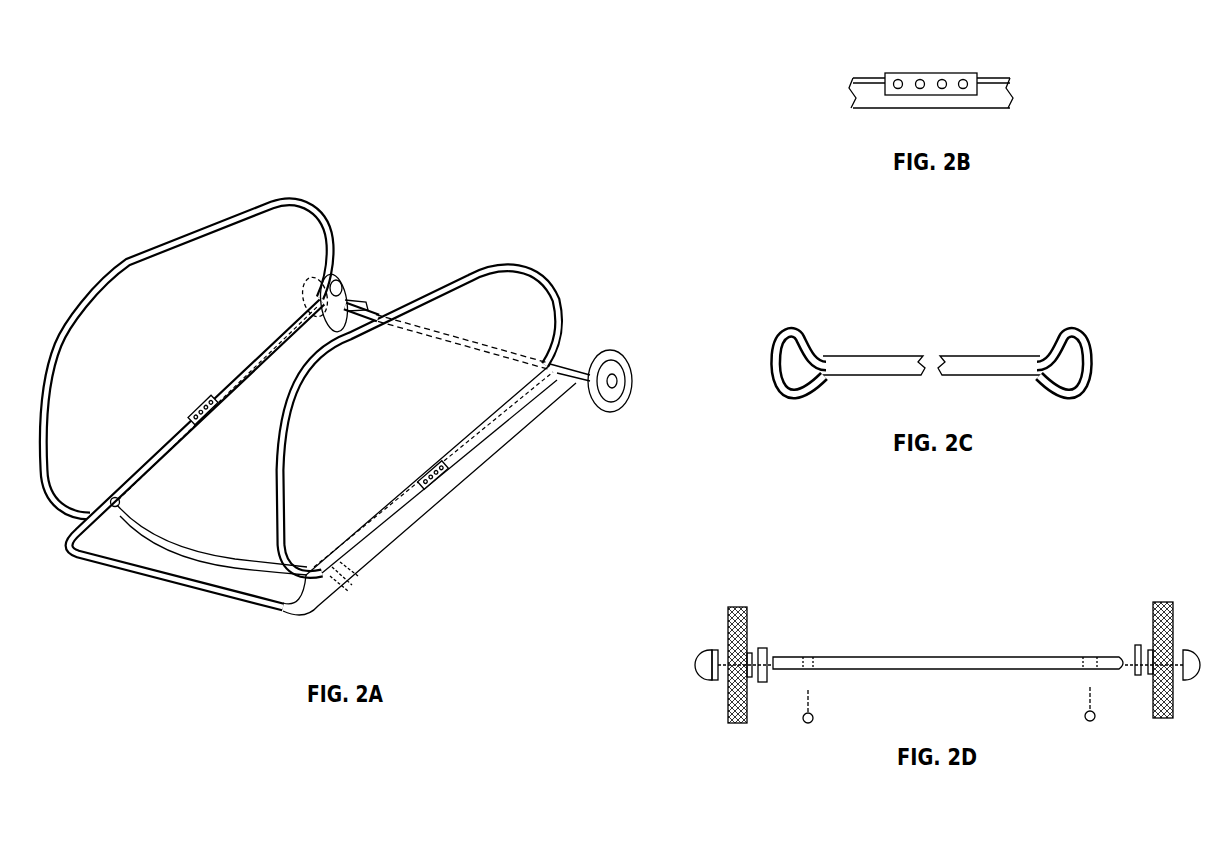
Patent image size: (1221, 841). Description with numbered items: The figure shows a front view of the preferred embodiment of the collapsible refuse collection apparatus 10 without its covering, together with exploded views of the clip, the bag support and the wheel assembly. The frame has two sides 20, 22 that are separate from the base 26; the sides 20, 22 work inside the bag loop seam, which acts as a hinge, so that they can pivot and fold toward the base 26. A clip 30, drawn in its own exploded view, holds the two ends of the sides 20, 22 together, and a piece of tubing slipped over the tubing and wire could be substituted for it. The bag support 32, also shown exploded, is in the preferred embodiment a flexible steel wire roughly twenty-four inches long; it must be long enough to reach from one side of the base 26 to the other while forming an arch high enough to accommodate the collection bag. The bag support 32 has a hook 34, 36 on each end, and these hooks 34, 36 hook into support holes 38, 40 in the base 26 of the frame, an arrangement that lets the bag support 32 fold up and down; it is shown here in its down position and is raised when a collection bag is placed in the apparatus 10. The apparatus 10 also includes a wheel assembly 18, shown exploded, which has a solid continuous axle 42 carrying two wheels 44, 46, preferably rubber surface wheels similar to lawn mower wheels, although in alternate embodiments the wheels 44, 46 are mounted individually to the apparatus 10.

In FIG. 2A, the collapsible refuse collection apparatus 10 is at (116, 212).
In FIG. 2D, the wheel assembly 18 is at (1008, 610).
In FIG. 2A, the side 20 is at (293, 415).
In FIG. 2A, the side 22 is at (186, 240).
In FIG. 2A, the base 26 is at (93, 560).
In FIG. 2A, the clip 30 is at (198, 407).
In FIG. 2B, the clip 30 is at (940, 73).
In FIG. 2A, the bag support 32 is at (215, 568).
In FIG. 2C, the bag support 32 is at (932, 338).
In FIG. 2C, the hook 34 is at (1067, 375).
In FIG. 2C, the hook 36 is at (803, 378).
In FIG. 2A, the support hole 38 is at (346, 570).
In FIG. 2A, the support hole 40 is at (117, 512).
In FIG. 2D, the axle 42 is at (887, 657).
In FIG. 2D, the wheel 44 is at (1152, 630).
In FIG. 2D, the wheel 46 is at (727, 630).